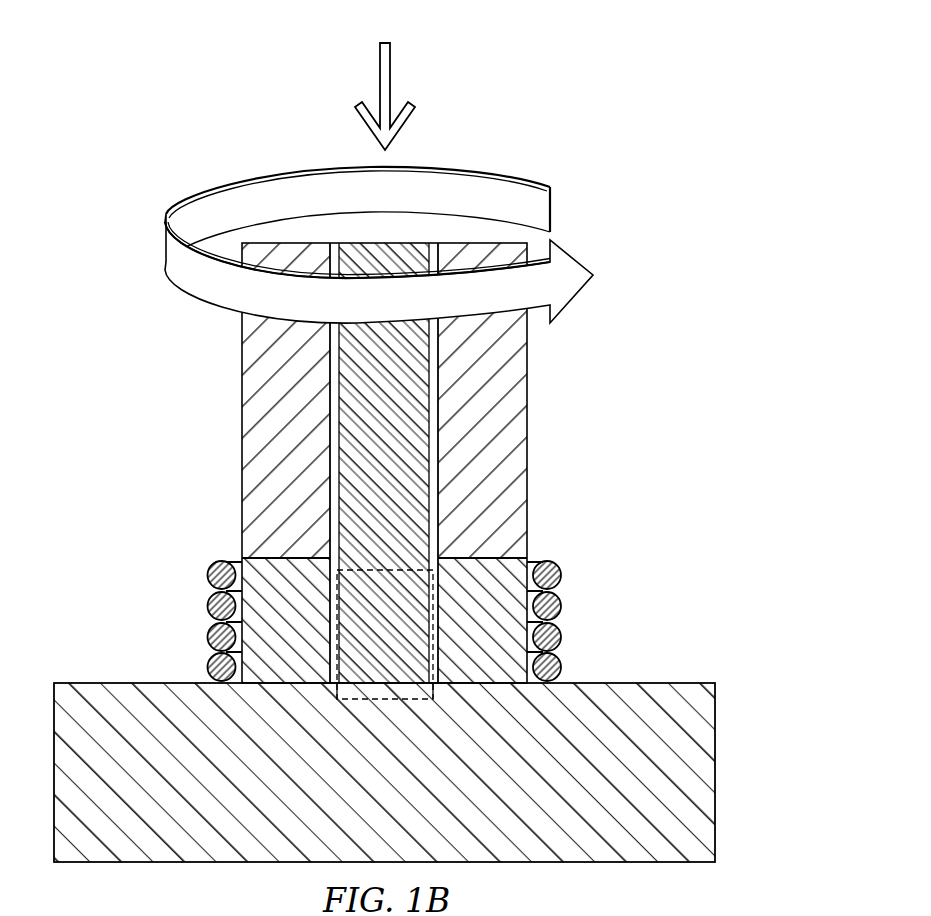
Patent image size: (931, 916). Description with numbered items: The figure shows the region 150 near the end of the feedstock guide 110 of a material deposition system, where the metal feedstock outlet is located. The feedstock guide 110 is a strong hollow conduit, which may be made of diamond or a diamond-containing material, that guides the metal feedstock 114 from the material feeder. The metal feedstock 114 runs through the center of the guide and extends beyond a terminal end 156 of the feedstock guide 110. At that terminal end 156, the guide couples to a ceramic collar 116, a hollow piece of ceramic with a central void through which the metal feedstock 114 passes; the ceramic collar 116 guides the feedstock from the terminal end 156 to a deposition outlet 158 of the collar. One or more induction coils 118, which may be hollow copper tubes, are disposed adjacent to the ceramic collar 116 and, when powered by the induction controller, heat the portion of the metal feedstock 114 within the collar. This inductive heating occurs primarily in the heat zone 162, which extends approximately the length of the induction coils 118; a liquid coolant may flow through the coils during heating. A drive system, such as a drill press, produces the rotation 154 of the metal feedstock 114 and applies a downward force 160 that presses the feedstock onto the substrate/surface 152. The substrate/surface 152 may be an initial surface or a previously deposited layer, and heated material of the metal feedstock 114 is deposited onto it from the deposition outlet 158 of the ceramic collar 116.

The feedstock guide 110 is at (267, 435).
The metal feedstock 114 is at (400, 445).
The ceramic collar 116 is at (283, 610).
The induction coil 118 is at (558, 563).
The region 150 is at (188, 158).
The substrate/surface 152 is at (400, 795).
The rotation 154 is at (460, 172).
The terminal end 156 is at (459, 551).
The deposition outlet 158 is at (449, 693).
The downward force 160 is at (390, 78).
The heat zone 162 is at (401, 632).